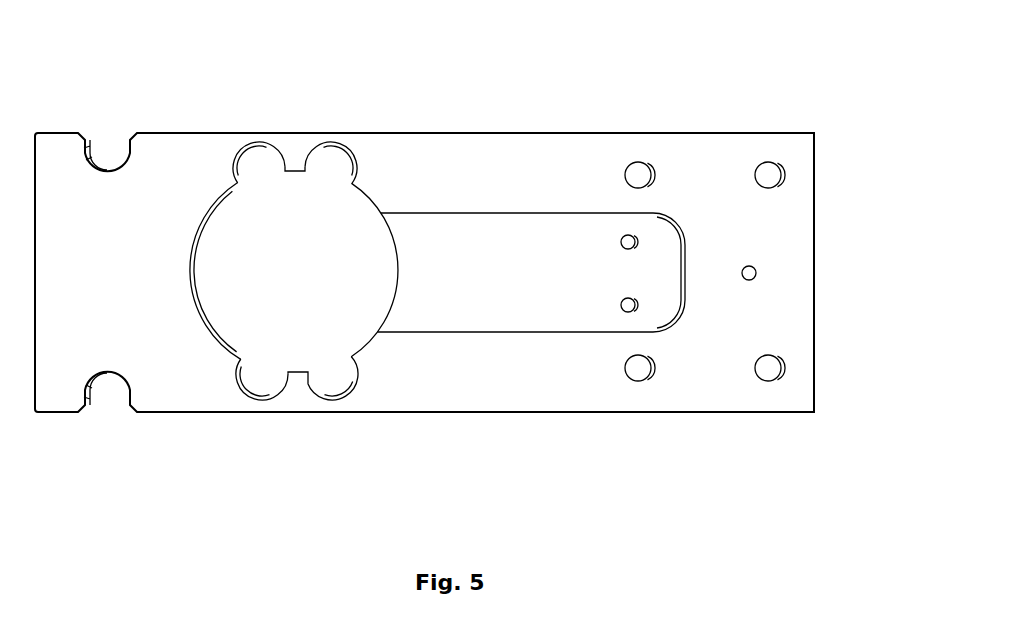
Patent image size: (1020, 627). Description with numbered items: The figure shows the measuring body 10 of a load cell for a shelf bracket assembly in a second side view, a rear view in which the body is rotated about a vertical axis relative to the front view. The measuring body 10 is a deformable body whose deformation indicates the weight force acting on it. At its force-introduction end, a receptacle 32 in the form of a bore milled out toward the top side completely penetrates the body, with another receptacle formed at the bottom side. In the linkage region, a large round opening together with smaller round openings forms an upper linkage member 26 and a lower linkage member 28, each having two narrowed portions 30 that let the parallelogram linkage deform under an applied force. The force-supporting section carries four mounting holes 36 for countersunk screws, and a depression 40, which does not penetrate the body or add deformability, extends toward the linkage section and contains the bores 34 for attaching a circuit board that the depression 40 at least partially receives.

The measuring body 10 is at (475, 170).
The upper linkage member 26 is at (300, 142).
The lower linkage member 28 is at (295, 413).
The narrowed portions 30 is at (249, 120).
The receptacle 32 is at (108, 117).
The bores 34 is at (633, 237).
The mounting holes 36 is at (641, 162).
The depression 40 is at (484, 345).